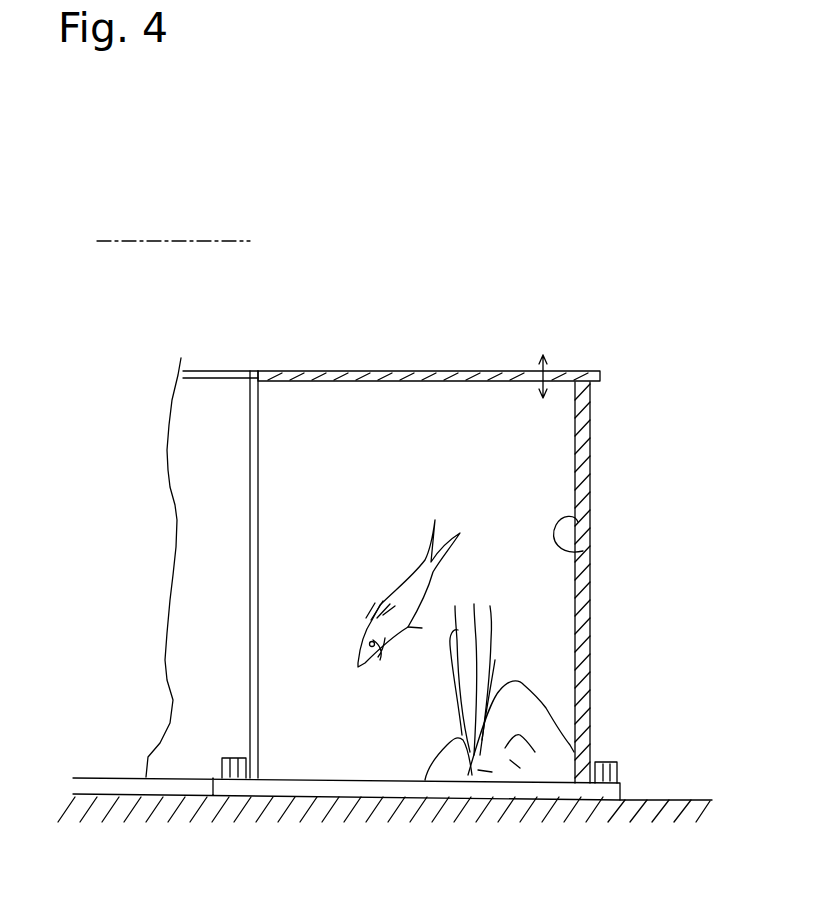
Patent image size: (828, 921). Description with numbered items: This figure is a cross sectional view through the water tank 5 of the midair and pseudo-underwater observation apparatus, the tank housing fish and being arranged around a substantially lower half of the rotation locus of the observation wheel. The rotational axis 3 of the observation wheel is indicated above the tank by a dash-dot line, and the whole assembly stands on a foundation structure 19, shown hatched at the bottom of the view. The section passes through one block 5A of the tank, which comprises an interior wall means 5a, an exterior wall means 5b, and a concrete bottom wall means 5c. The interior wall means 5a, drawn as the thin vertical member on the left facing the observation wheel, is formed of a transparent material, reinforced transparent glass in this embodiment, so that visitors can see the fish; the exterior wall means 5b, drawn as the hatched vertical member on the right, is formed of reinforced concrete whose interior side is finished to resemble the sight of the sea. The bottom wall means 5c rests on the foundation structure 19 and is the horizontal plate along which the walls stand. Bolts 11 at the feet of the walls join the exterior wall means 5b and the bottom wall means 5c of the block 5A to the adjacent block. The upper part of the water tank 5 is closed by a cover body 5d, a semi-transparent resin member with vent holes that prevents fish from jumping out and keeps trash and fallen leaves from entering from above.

The rotational axis 3 is at (182, 238).
The water tank 5 is at (532, 334).
The interior wall means 5a is at (247, 450).
The block 5A is at (597, 477).
The exterior wall means 5b is at (583, 551).
The bottom wall means 5c is at (345, 780).
The cover body 5d is at (428, 374).
The bolts 11 is at (613, 754).
The foundation structure 19 is at (660, 800).